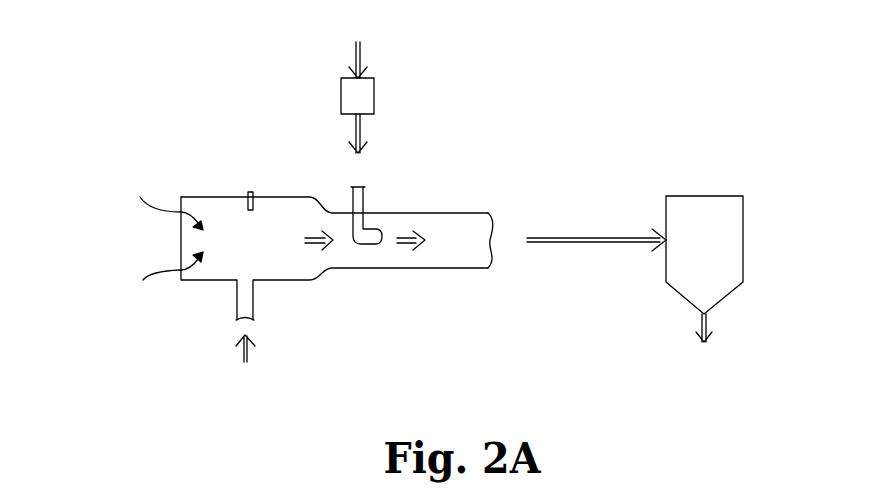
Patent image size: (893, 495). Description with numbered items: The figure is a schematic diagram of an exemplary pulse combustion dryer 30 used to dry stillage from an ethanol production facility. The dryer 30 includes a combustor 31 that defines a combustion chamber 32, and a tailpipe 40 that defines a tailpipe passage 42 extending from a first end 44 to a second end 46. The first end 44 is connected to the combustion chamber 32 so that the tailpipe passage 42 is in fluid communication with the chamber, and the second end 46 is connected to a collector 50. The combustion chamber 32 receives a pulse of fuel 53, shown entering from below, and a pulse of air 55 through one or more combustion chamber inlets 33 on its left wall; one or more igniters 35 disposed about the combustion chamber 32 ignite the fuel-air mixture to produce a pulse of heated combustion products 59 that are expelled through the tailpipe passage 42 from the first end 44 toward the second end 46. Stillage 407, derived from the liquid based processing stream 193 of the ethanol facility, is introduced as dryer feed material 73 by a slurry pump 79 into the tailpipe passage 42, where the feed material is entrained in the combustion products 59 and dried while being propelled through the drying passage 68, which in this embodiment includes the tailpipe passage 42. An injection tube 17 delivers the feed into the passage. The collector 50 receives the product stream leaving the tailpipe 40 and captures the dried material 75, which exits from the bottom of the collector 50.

The pulse combustion dryer 30 is at (133, 117).
The combustor 31 is at (273, 197).
The combustion chamber 32 is at (217, 268).
The combustion chamber inlet 33 is at (181, 212).
The igniter 35 is at (250, 192).
The tailpipe 40 is at (445, 213).
The tailpipe passage 42 is at (410, 268).
The first end 44 is at (312, 270).
The second end 46 is at (490, 268).
The drying passage 68 is at (455, 258).
The injector tube 17 is at (363, 203).
The heated combustion products 59 is at (311, 243).
The air 55 is at (181, 212).
The fuel 53 is at (248, 350).
The dryer feed material 73 is at (364, 55).
The stillage 407 is at (354, 58).
The liquid based processing stream 193 is at (361, 65).
The slurry pump 79 is at (375, 96).
The collector 50 is at (733, 222).
The dried material 75 is at (607, 238).